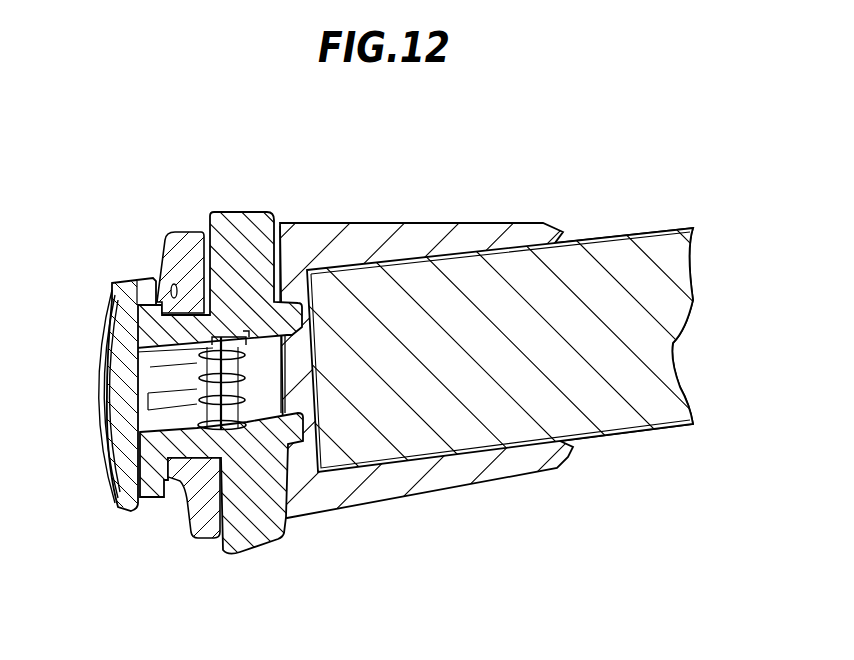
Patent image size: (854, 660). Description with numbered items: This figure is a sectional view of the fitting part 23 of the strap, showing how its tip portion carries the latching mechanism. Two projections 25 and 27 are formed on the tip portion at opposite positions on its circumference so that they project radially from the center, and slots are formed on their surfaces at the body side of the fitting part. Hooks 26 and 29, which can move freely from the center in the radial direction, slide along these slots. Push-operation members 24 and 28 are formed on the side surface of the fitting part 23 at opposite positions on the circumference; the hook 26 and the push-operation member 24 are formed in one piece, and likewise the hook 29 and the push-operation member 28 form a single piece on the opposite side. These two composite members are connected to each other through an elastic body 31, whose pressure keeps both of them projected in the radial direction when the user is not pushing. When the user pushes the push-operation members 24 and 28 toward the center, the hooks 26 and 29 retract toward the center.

The fitting part 23 is at (350, 516).
The push-operation member 24 is at (241, 212).
The projection 25 is at (109, 294).
The hook 26 is at (157, 300).
The projection 27 is at (128, 497).
The push-operation member 28 is at (250, 551).
The hook 29 is at (163, 497).
The elastic body 31 is at (243, 374).